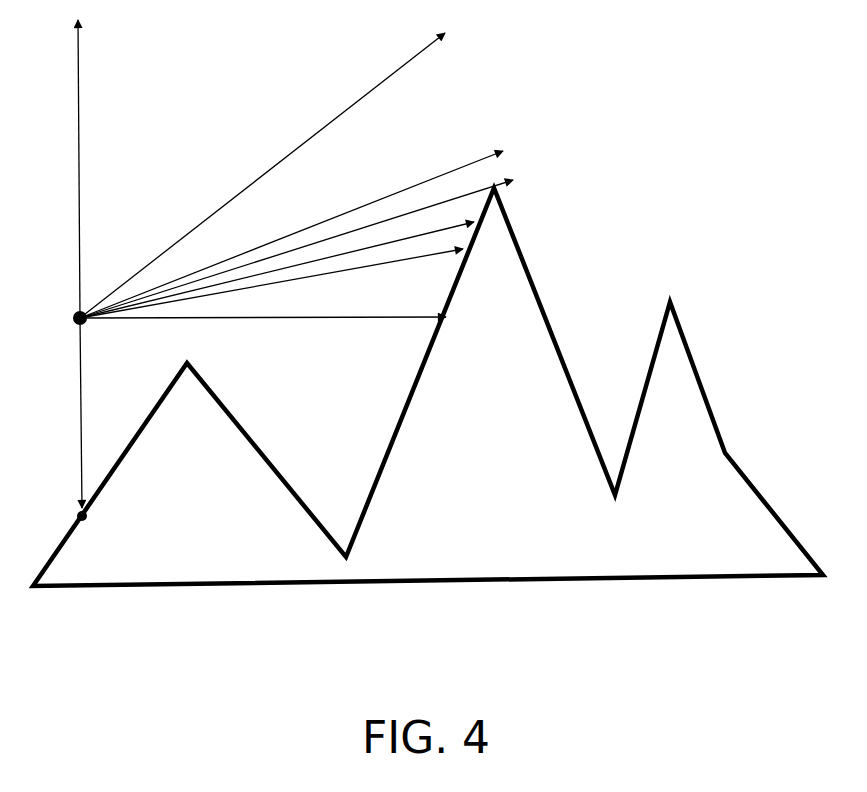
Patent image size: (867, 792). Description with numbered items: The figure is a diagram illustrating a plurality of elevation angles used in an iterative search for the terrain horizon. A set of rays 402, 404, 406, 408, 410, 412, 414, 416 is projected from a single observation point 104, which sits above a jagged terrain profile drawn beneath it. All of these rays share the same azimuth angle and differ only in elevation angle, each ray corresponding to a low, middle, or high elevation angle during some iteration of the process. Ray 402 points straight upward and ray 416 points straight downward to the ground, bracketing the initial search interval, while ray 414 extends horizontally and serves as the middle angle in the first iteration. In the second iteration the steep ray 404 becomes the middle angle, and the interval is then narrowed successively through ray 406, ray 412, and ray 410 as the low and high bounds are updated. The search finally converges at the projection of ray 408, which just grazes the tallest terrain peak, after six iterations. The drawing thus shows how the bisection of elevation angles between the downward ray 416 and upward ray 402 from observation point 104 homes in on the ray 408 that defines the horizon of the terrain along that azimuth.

The observation point 104 is at (74, 313).
The ray 402 is at (77, 86).
The ray 404 is at (362, 97).
The ray 406 is at (203, 268).
The ray 408 is at (277, 257).
The ray 410 is at (358, 250).
The ray 412 is at (316, 277).
The ray 414 is at (393, 316).
The ray 416 is at (83, 385).